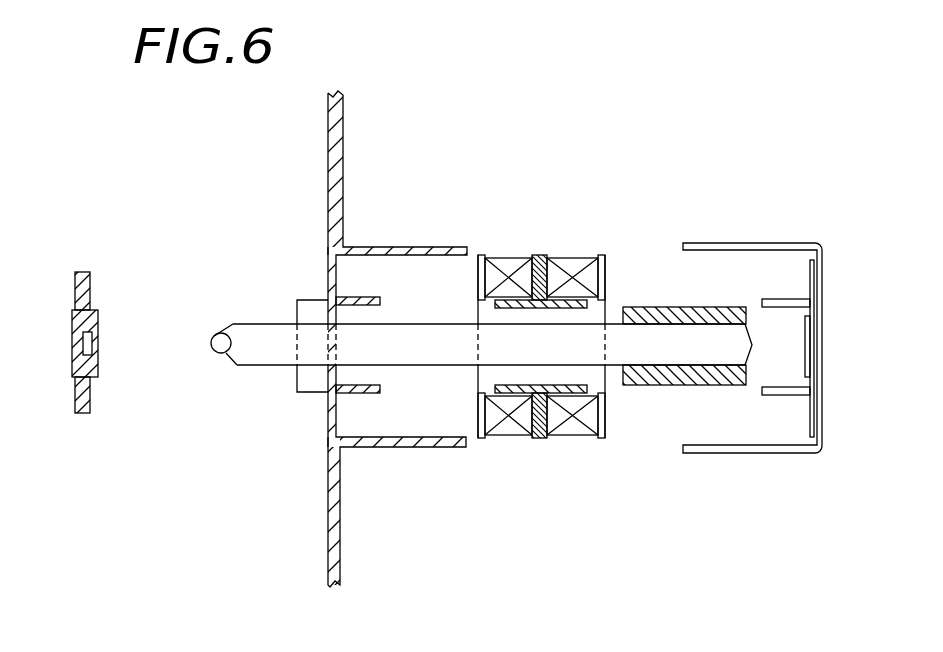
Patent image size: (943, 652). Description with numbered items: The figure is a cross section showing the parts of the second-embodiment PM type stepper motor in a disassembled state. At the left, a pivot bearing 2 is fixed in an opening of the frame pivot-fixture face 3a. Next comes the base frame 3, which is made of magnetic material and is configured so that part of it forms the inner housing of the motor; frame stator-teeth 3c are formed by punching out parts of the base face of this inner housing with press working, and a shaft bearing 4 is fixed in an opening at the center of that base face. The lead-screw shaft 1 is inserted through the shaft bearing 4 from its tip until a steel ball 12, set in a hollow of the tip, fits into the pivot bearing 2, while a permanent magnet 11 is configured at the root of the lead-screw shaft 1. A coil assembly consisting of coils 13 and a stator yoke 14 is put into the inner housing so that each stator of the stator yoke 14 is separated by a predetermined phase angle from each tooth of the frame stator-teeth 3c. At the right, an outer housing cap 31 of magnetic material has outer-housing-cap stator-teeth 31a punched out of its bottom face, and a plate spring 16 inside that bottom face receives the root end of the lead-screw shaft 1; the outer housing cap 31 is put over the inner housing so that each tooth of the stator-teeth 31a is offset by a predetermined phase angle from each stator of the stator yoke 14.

The lead-screw shaft 1 is at (428, 337).
The pivot bearing 2 is at (73, 318).
The base frame 3 is at (332, 145).
The frame pivot-fixture face 3a is at (87, 272).
The frame stator-teeth 3c is at (353, 297).
The shaft bearing 4 is at (298, 392).
The permanent magnet 11 is at (642, 307).
The steel ball 12 is at (215, 352).
The coils 13 is at (577, 428).
The stator yoke 14 is at (530, 432).
The plate spring 16 is at (816, 341).
The outer housing cap 31 is at (785, 242).
The outer-housing-cap stator-teeth 31a is at (787, 303).